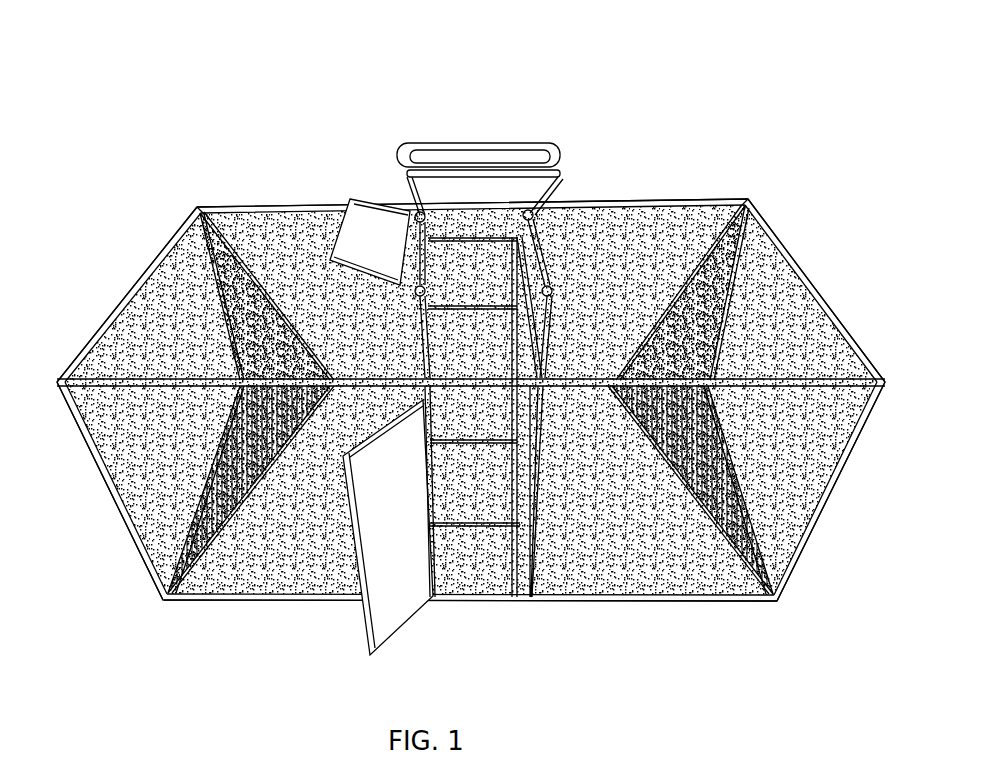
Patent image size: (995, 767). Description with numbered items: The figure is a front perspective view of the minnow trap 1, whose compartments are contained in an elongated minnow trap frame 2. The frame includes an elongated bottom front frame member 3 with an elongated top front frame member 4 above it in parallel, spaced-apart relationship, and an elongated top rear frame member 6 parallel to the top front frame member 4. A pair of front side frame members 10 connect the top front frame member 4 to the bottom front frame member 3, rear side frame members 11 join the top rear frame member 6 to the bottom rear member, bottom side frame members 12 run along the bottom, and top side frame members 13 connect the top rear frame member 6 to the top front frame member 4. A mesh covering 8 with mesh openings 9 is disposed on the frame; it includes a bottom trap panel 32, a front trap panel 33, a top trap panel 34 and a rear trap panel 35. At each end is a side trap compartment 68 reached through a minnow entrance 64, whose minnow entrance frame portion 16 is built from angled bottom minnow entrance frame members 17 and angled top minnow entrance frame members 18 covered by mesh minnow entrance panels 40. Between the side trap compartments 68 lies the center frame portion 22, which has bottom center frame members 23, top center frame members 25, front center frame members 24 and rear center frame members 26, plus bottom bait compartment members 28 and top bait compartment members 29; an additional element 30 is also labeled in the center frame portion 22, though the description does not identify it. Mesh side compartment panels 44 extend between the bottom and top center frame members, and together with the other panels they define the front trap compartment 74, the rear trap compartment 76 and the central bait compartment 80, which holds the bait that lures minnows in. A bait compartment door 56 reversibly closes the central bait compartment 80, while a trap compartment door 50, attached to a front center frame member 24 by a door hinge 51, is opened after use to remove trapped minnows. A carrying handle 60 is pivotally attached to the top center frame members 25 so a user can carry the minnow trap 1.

The minnow trap 1 is at (180, 103).
The minnow trap frame 2 is at (242, 608).
The bottom front frame member 3 is at (740, 604).
The top front frame member 4 is at (793, 380).
The top rear frame member 6 is at (645, 197).
The mesh covering 8 is at (110, 473).
The mesh openings 9 is at (228, 210).
The front side frame members 10 is at (130, 530).
The rear side frame members 11 is at (197, 245).
The bottom side frame members 12 is at (213, 468).
The top side frame members 13 is at (115, 305).
The minnow entrance frame portions 16 is at (257, 497).
The bottom minnow entrance frame members 17 is at (205, 515).
The top minnow entrance frame members 18 is at (220, 240).
The center frame portion 22 is at (568, 560).
The bottom center frame members 23 is at (510, 447).
The front center frame members 24 is at (430, 575).
The top center frame members 25 is at (550, 330).
The rear center frame members 26 is at (530, 243).
The bottom bait compartment members 28 is at (425, 470).
The top bait compartment members 29 is at (472, 262).
The right upright 30 is at (534, 420).
The bottom trap panel 32 is at (677, 604).
The front trap panel 33 is at (333, 570).
The top trap panel 34 is at (107, 352).
The rear trap panel 35 is at (679, 205).
The mesh minnow entrance panels 40 is at (250, 338).
The mesh side compartment panels 44 is at (549, 523).
The trap compartment door 50 is at (398, 603).
The door hinge 51 is at (410, 492).
The bait compartment door 56 is at (371, 228).
The carrying handle 60 is at (550, 232).
The minnow entrance 64 is at (190, 214).
The side trap compartments 68 is at (312, 245).
The front trap compartment 74 is at (488, 563).
The rear trap compartment 76 is at (484, 207).
The central bait compartment 80 is at (455, 243).